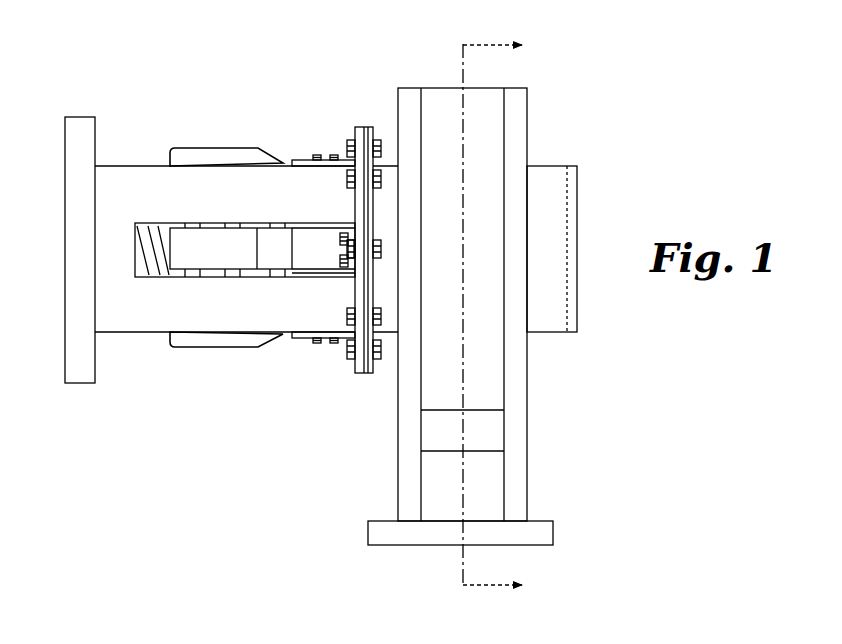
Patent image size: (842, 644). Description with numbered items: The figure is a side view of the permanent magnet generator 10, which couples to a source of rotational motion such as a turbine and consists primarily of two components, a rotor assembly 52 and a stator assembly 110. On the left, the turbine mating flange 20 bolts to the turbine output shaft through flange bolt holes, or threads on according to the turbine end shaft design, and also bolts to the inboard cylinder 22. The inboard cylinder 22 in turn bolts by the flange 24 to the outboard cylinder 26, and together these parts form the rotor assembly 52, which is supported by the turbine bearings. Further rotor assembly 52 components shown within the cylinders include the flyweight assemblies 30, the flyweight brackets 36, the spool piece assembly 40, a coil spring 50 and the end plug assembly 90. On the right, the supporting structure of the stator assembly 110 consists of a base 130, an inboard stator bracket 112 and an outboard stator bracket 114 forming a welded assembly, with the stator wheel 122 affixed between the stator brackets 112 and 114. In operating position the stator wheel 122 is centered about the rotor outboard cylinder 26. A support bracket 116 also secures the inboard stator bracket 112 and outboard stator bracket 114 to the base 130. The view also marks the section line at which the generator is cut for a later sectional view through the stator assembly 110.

The permanent magnet generator 10 is at (655, 118).
The turbine mating flange 20 is at (80, 117).
The inboard cylinder 22 is at (153, 178).
The flange 24 is at (366, 127).
The outboard cylinder 26 is at (552, 175).
The flyweight assemblies 30 is at (200, 158).
The flyweight brackets 36 is at (310, 159).
The spool piece assembly 40 is at (280, 223).
The coil spring 50 is at (152, 274).
The rotor assembly 52 is at (332, 148).
The end plug assembly 90 is at (580, 208).
The stator assembly 110 is at (438, 100).
The inboard stator bracket 112 is at (405, 402).
The outboard stator bracket 114 is at (516, 420).
The support bracket 116 is at (433, 468).
The stator wheel 122 is at (483, 352).
The base 130 is at (375, 532).